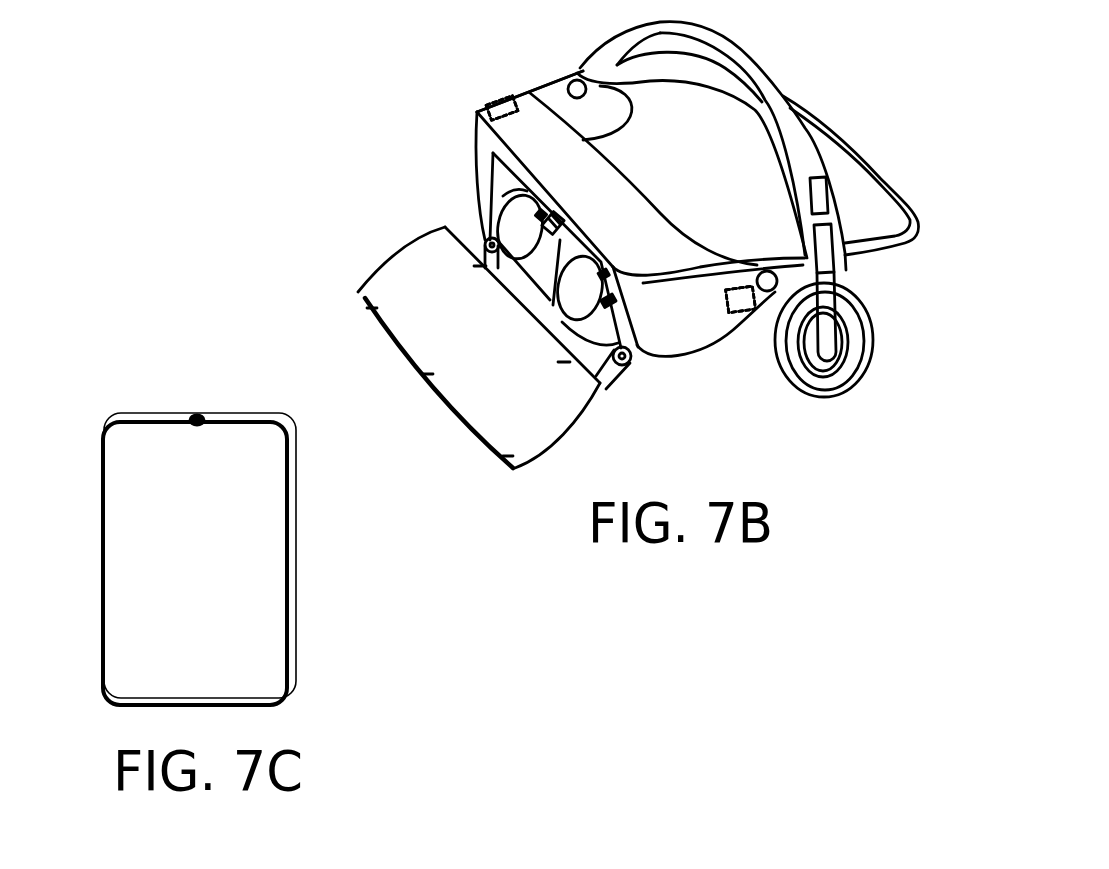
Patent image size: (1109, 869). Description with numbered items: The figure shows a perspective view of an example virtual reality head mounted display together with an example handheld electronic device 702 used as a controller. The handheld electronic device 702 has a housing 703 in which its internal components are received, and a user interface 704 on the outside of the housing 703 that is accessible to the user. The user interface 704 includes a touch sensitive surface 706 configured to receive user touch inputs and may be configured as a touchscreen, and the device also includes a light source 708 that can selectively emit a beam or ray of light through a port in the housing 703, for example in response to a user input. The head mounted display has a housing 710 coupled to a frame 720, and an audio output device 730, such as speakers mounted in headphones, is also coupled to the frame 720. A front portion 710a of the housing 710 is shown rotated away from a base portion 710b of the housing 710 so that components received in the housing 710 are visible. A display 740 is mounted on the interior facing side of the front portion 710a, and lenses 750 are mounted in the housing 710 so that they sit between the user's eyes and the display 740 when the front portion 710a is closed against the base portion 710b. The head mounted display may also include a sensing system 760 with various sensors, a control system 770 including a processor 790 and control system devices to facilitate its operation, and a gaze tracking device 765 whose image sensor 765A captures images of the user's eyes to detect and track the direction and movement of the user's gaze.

In FIG. 7C, the handheld electronic device 702 is at (163, 515).
In FIG. 7C, the housing 703 is at (145, 414).
In FIG. 7C, the user interface 704 is at (103, 584).
In FIG. 7C, the touch sensitive surface 706 is at (127, 535).
In FIG. 7C, the light source 708 is at (195, 414).
In FIG. 7B, the housing 710 is at (470, 86).
In FIG. 7B, the front portion 710a is at (360, 297).
In FIG. 7B, the base portion 710b is at (513, 97).
In FIG. 7B, the frame 720 is at (880, 167).
In FIG. 7B, the audio output device 730 is at (872, 300).
In FIG. 7B, the display 740 is at (400, 270).
In FIG. 7B, the lenses 750 is at (487, 238).
In FIG. 7B, the sensing system 760 is at (477, 110).
In FIG. 7B, the gaze tracking device 765 is at (560, 232).
In FIG. 7B, the image sensor 765A is at (545, 215).
In FIG. 7B, the control system 770 is at (733, 310).
In FIG. 7B, the processor 790 is at (733, 310).